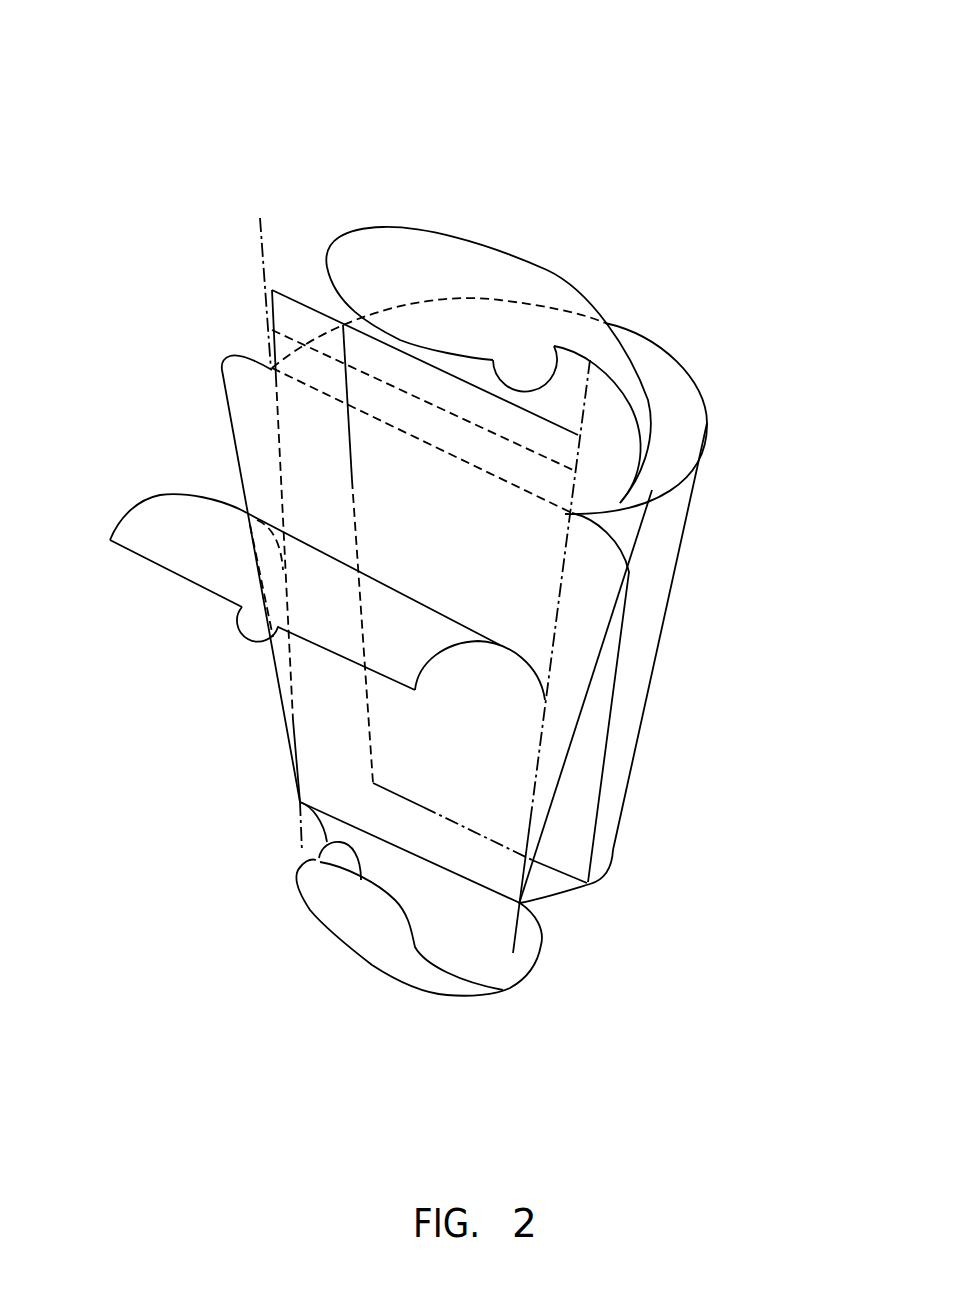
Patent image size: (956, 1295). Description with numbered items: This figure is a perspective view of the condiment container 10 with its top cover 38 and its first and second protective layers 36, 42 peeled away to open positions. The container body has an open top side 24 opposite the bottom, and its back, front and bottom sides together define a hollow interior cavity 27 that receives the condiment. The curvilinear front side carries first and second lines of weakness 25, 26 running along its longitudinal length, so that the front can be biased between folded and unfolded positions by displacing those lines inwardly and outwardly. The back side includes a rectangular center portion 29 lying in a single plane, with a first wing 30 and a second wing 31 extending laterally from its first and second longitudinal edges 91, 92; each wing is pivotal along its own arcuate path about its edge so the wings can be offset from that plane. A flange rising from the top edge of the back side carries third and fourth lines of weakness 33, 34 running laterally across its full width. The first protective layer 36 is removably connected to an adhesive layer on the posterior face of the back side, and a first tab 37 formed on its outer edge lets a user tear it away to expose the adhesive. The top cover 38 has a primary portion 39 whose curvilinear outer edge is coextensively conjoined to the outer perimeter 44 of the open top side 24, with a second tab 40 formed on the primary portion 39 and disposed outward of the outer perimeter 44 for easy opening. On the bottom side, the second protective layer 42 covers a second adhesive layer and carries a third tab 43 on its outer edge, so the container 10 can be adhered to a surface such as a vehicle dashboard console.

The condiment container 10 is at (433, 94).
The open top side 24 is at (700, 378).
The first line of weakness 25 is at (615, 720).
The second line of weakness 26 is at (352, 480).
The hollow interior cavity 27 is at (694, 431).
The rectangular center portion 29 is at (447, 539).
The first wing 30 is at (575, 670).
The second wing 31 is at (248, 408).
The third line of weakness 33 is at (293, 343).
The fourth line of weakness 34 is at (352, 407).
The first protective layer 36 is at (217, 563).
The first tab 37 is at (253, 633).
The top cover 38 is at (504, 288).
The primary portion 39 is at (474, 242).
The second tab 40 is at (530, 360).
The second protective layer 42 is at (487, 950).
The third tab 43 is at (343, 855).
The outer perimeter 44 is at (685, 360).
The first longitudinal edge 91 is at (540, 797).
The second longitudinal edge 92 is at (290, 837).